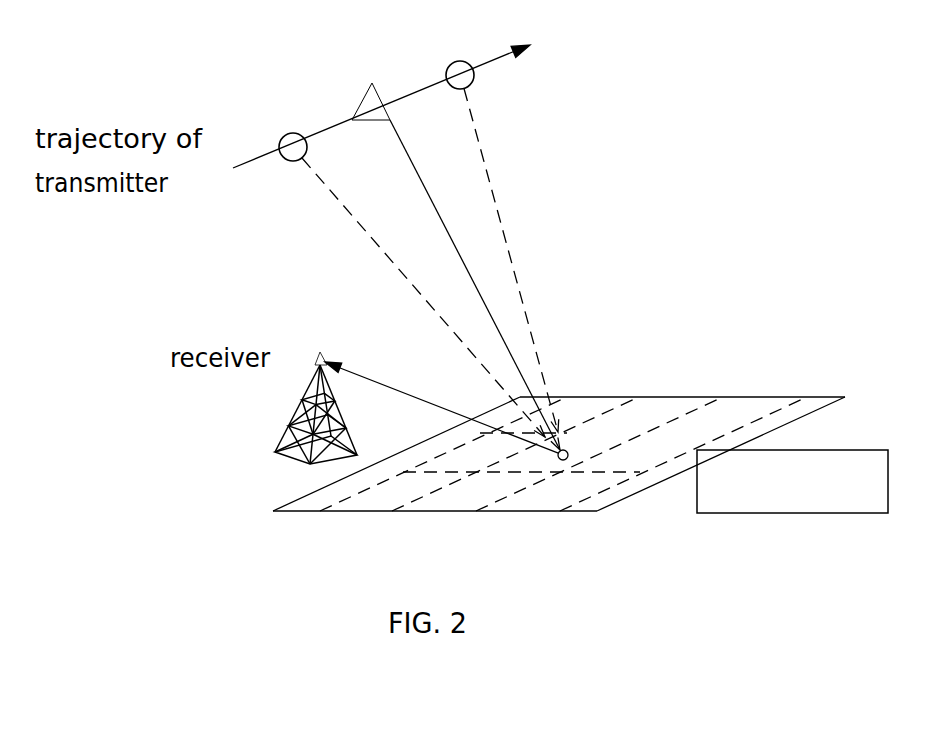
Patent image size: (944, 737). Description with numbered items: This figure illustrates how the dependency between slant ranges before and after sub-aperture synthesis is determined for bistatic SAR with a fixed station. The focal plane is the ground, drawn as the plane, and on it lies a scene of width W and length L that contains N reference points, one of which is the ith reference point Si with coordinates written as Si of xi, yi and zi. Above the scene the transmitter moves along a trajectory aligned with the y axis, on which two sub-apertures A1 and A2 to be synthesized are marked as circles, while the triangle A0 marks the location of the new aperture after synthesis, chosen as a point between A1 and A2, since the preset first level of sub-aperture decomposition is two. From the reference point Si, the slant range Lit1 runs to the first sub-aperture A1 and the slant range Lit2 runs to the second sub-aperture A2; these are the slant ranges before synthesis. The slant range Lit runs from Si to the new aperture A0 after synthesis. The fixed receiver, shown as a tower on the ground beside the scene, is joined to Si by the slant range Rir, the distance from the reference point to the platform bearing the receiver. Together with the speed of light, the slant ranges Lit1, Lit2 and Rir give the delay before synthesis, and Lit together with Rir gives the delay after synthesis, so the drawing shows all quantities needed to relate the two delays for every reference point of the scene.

The new aperture after synthesis A0 is at (352, 53).
The first sub-aperture before synthesis A1 is at (275, 84).
The second sub-aperture before synthesis A2 is at (437, 22).
The slant range to the new aperture Lit is at (466, 285).
The slant range to the first sub-aperture Lit1 is at (423, 297).
The slant range to the second sub-aperture Lit2 is at (518, 261).
The slant range to the receiver Rir is at (441, 399).
The width of the scene W is at (682, 369).
The length of the scene L is at (721, 455).
The y axis y is at (393, 102).
The ith reference point Si is at (723, 463).
The element receiver is at (316, 408).
The focal plane is at (559, 427).